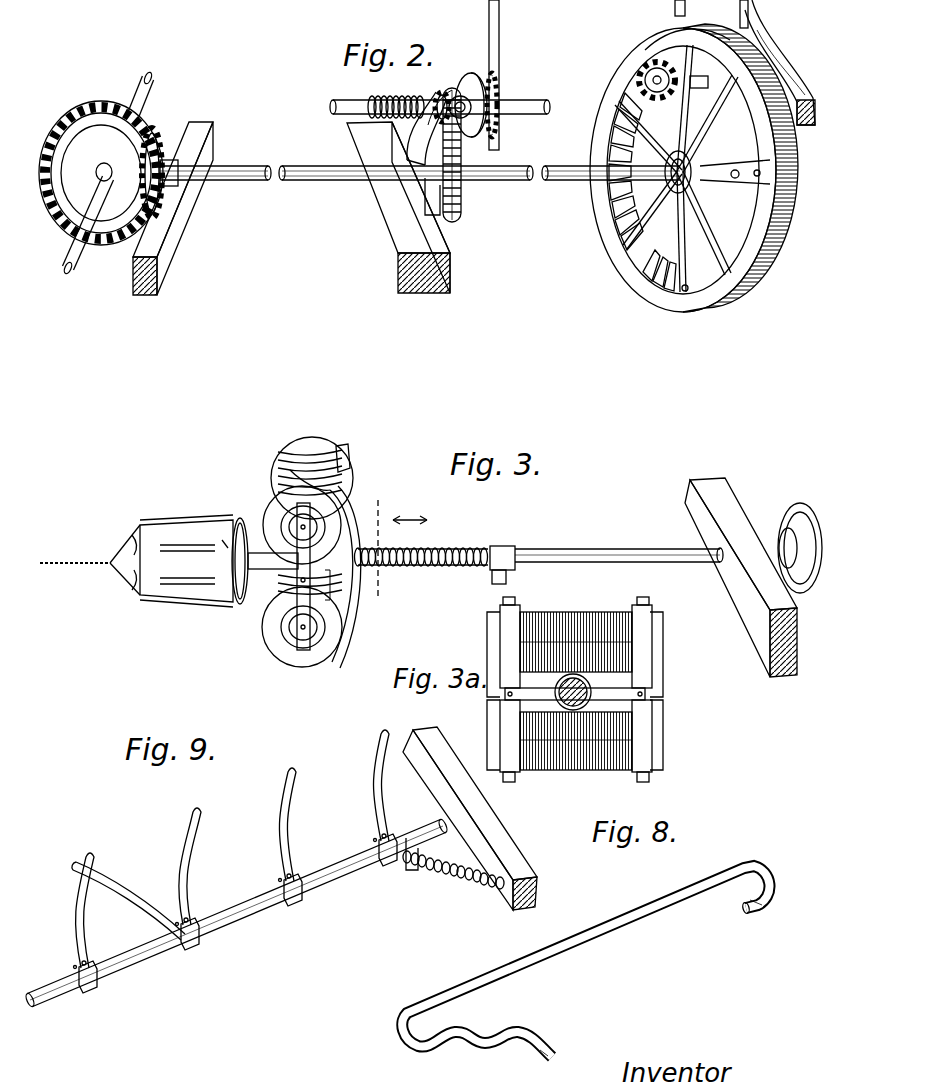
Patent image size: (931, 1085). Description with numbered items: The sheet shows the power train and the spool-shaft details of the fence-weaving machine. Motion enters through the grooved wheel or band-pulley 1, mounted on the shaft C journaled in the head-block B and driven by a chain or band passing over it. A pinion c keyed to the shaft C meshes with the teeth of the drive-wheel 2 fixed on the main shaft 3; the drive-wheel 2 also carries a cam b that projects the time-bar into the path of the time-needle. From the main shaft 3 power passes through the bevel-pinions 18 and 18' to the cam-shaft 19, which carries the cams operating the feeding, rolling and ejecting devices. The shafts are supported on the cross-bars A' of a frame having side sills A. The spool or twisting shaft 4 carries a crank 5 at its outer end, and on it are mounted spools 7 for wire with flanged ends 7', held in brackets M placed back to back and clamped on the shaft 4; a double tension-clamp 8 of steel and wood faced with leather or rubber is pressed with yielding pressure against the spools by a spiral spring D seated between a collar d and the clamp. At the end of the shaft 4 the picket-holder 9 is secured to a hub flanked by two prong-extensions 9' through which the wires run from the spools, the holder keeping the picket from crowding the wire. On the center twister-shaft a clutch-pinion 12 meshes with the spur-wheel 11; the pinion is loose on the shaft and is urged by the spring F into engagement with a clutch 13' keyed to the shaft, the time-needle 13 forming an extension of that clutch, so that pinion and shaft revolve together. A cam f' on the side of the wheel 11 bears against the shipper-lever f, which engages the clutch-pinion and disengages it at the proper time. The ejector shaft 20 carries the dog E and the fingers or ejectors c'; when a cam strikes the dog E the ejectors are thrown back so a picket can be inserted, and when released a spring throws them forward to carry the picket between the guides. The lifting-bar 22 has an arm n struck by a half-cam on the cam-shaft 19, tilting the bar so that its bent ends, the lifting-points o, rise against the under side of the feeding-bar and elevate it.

In FIG. 2, the grooved wheel or band-pulley 1 is at (690, 24).
In FIG. 2, the drive-wheel 2 is at (772, 132).
In FIG. 2, the main shaft 3 is at (420, 182).
In FIG. 3, the main shaft 3 is at (382, 551).
In FIG. 2, the spool or twisting shaft 4 is at (333, 107).
In FIG. 3, the spool or twisting shaft 4 is at (539, 549).
In FIG. 3A, the spool or twisting shaft 4 is at (579, 691).
In FIG. 3, the crank 5 is at (790, 516).
In FIG. 3, the spool 7 is at (307, 552).
In FIG. 3, the flanged end 7' is at (280, 591).
In FIG. 3A, the flanged end 7' is at (585, 686).
In FIG. 3, the double tension-clamp 8 is at (328, 569).
In FIG. 3A, the double tension-clamp 8 is at (575, 695).
In FIG. 3, the picket-holder 9 is at (186, 561).
In FIG. 3, the prong-extension 9' is at (194, 559).
In FIG. 2, the spur-wheel 11 is at (465, 205).
In FIG. 2, the clutch-pinion 12 is at (441, 90).
In FIG. 2, the time-needle 13 is at (506, 75).
In FIG. 2, the clutch 13' is at (510, 104).
In FIG. 2, the bevel-pinion 18 is at (160, 162).
In FIG. 2, the bevel-wheel 18' is at (101, 173).
In FIG. 2, the cam-shaft 19 is at (99, 172).
In FIG. 9, the finger or ejector shaft 20 is at (237, 912).
In FIG. 8, the lifting-bar 22 is at (585, 961).
In FIG. 2, the side sill A is at (697, 14).
In FIG. 2, the cross-bar A' is at (302, 208).
In FIG. 3, the cross-bar A' is at (741, 577).
In FIG. 2, the head-block B is at (776, 23).
In FIG. 2, the shaft C is at (645, 80).
In FIG. 2, the pinion c is at (690, 89).
In FIG. 9, the finger or ejector c' is at (237, 851).
In FIG. 2, the cam b is at (727, 270).
In FIG. 3, the collar d is at (506, 549).
In FIG. 3, the spiral spring D is at (410, 532).
In FIG. 9, the dog E is at (72, 866).
In FIG. 2, the spring F is at (386, 96).
In FIG. 2, the shipper-lever f is at (415, 127).
In FIG. 2, the cam f' is at (433, 196).
In FIG. 3, the bracket M is at (322, 590).
In FIG. 3A, the bracket M is at (490, 636).
In FIG. 8, the arm n is at (546, 1050).
In FIG. 8, the lifting-point o is at (770, 900).